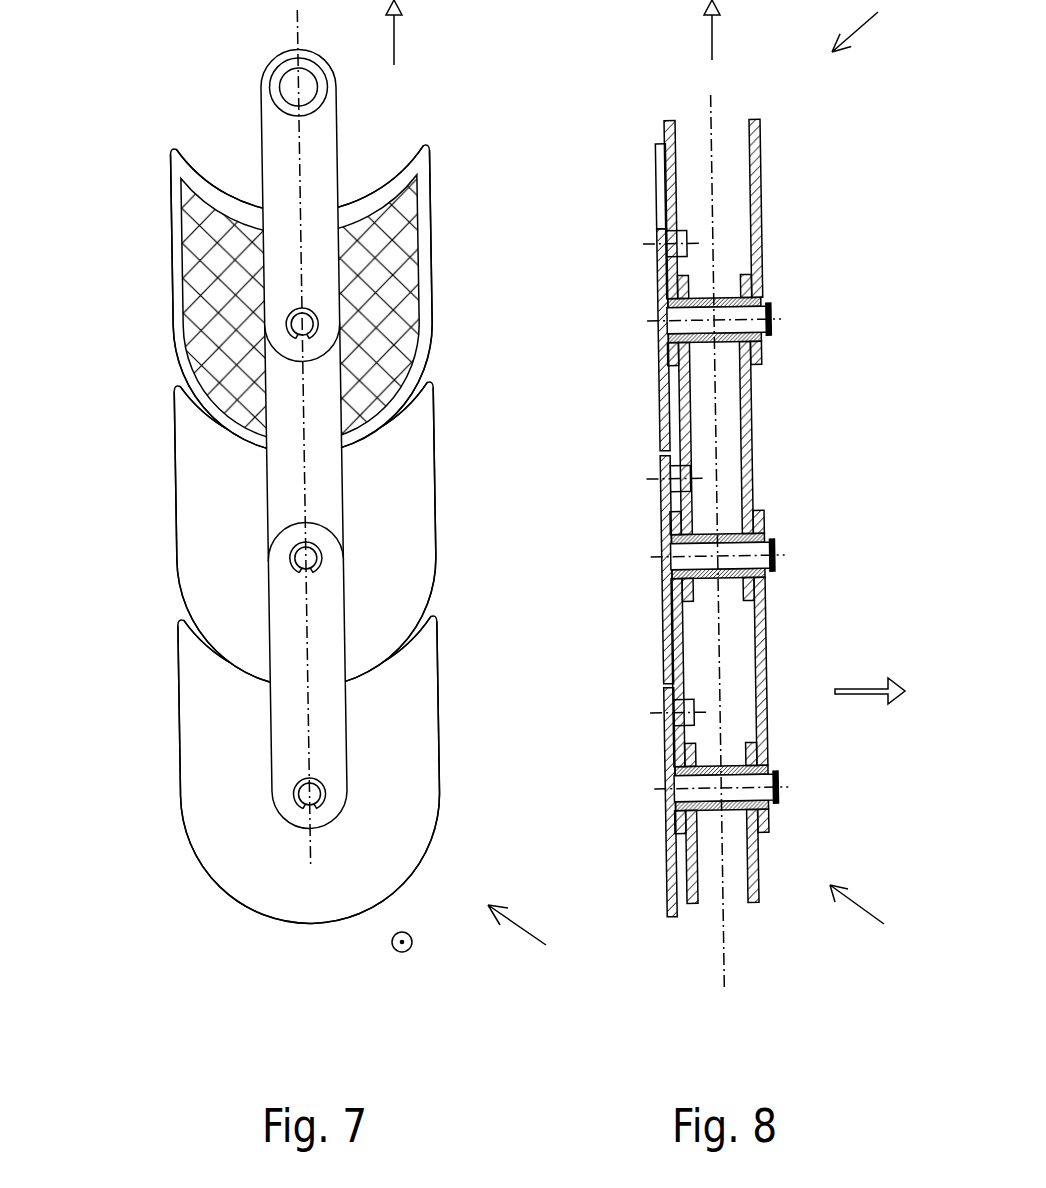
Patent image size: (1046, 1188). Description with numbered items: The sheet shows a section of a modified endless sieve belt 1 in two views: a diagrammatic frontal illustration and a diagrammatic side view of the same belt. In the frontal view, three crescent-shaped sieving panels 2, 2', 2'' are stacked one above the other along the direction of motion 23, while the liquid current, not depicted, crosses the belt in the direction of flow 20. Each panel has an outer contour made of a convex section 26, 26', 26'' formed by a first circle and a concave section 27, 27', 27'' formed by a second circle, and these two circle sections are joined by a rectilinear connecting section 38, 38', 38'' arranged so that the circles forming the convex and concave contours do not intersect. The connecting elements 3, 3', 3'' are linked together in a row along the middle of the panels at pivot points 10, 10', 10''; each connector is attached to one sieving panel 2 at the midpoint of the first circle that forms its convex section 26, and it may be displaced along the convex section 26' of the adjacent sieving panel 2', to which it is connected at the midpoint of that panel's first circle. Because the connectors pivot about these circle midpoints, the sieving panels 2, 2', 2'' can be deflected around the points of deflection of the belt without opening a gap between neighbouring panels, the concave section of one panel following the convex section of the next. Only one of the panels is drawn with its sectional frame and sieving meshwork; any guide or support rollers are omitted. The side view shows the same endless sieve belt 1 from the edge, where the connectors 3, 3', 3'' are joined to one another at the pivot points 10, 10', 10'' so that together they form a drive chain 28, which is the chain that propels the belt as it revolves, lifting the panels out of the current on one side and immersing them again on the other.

In FIG. 7, the endless sieve belt 1 is at (533, 935).
In FIG. 8, the endless sieve belt 1 is at (862, 26).
In FIG. 7, the sieving panel 2 is at (267, 770).
In FIG. 8, the sieving panel 2 is at (638, 802).
In FIG. 7, the sieving panel 2' is at (260, 535).
In FIG. 8, the sieving panel 2' is at (631, 569).
In FIG. 7, the sieving panel 2'' is at (253, 300).
In FIG. 8, the sieving panel 2'' is at (627, 297).
In FIG. 7, the connector 3 is at (418, 675).
In FIG. 8, the connector 3 is at (787, 671).
In FIG. 7, the connector 3' is at (417, 441).
In FIG. 8, the connector 3' is at (784, 437).
In FIG. 7, the connector 3'' is at (413, 205).
In FIG. 8, the connector 3'' is at (785, 208).
In FIG. 7, the pivot pin 10 is at (204, 829).
In FIG. 8, the pivot pin 10 is at (784, 797).
In FIG. 7, the pivot pin 10' is at (433, 543).
In FIG. 8, the pivot pin 10' is at (785, 539).
In FIG. 7, the pivot pin 10'' is at (432, 321).
In FIG. 8, the pivot pin 10'' is at (783, 304).
In FIG. 7, the direction of flow 20 is at (412, 945).
In FIG. 8, the direction of flow 20 is at (869, 694).
In FIG. 7, the direction of motion 23 is at (394, 30).
In FIG. 8, the direction of motion 23 is at (712, 30).
In FIG. 7, the convex section 26 is at (262, 872).
In FIG. 7, the convex section 26' is at (254, 622).
In FIG. 7, the convex section 26'' is at (250, 388).
In FIG. 7, the concave section 27 is at (255, 651).
In FIG. 7, the concave section 27' is at (249, 417).
In FIG. 7, the concave section 27'' is at (243, 175).
In FIG. 8, the drive chain 28 is at (872, 916).
In FIG. 7, the rectilinear connecting section 38 is at (329, 708).
In FIG. 7, the rectilinear connecting section 38' is at (323, 473).
In FIG. 7, the rectilinear connecting section 38'' is at (320, 239).